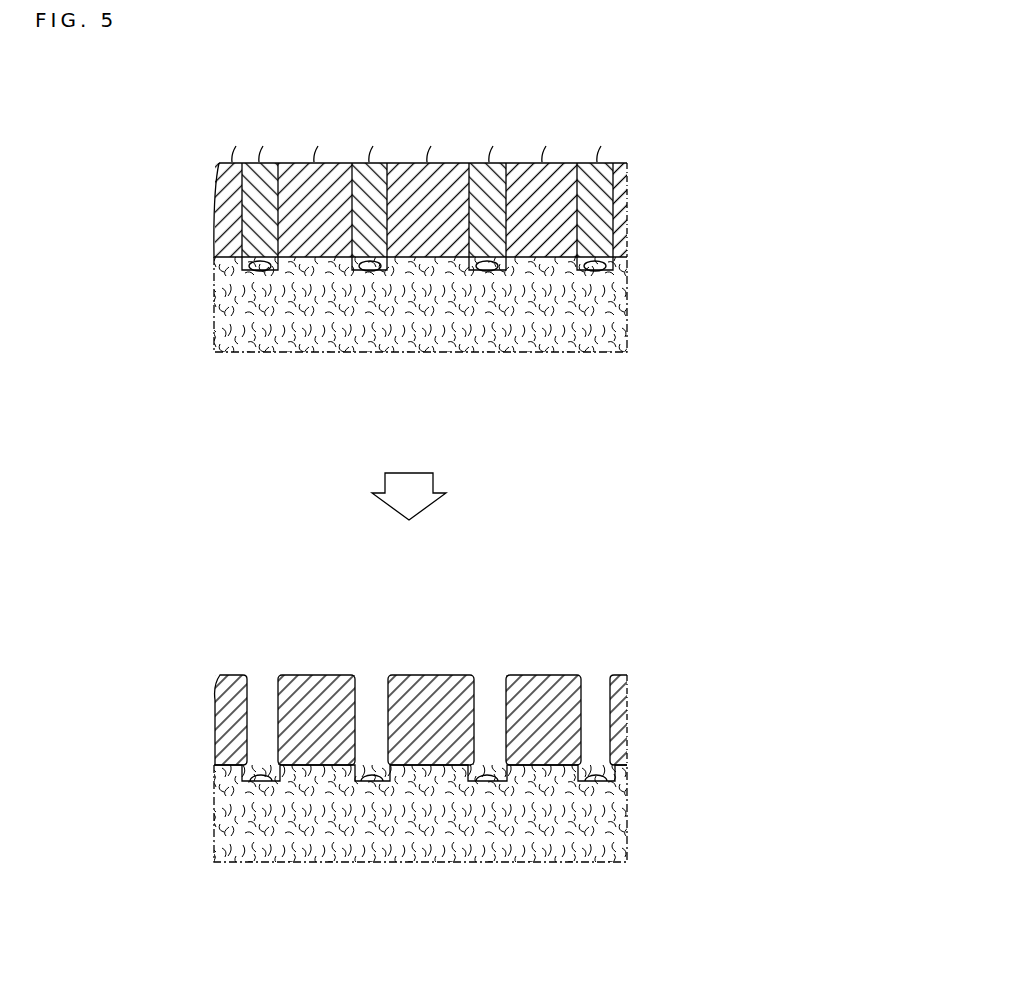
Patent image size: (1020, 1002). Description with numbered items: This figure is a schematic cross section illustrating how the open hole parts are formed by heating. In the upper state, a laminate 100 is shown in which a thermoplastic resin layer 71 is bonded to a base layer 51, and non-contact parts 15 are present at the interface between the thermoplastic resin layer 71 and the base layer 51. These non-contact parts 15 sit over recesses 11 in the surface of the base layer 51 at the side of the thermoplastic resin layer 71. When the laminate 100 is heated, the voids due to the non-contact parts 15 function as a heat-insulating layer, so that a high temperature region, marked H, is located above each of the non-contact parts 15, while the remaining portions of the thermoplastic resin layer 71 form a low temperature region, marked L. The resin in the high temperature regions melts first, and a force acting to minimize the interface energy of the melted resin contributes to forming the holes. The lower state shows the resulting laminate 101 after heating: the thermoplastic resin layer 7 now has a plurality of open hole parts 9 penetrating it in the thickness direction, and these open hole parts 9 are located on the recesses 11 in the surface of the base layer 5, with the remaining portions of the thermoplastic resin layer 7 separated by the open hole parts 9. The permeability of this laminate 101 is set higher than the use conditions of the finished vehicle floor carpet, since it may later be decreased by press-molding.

The laminate 100 is at (660, 158).
The thermoplastic resin layer 71 is at (627, 214).
The non-contact parts 15 is at (276, 252).
The base layer 51 is at (627, 300).
The recesses 11 is at (253, 272).
The laminate having the open hole parts 101 is at (682, 635).
The thermoplastic resin layer 7 is at (233, 680).
The open hole parts 9 is at (263, 707).
The base layer 5 is at (627, 815).